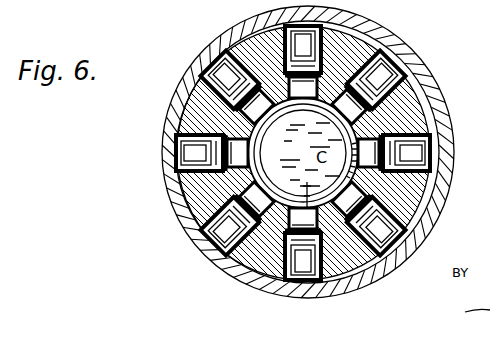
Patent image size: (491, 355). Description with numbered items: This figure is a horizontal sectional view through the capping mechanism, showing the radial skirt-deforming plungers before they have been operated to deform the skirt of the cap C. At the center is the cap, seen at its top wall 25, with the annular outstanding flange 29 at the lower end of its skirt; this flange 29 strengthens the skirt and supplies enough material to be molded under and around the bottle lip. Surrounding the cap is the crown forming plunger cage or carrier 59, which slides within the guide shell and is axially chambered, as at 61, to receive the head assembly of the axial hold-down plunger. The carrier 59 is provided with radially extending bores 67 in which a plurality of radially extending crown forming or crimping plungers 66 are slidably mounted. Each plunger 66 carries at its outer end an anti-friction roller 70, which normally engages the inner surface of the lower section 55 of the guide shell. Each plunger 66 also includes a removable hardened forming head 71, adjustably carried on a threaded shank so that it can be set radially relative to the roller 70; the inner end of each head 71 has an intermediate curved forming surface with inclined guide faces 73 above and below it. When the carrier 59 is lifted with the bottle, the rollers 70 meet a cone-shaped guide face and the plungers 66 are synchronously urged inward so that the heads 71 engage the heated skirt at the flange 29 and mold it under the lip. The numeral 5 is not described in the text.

The motor casing 5 is at (438, 112).
The radially extending bores 67 is at (415, 86).
The crown forming plunger cage or carrier 59 is at (440, 123).
The anti-friction rollers 70 is at (393, 58).
The crown forming or crimping plungers 66 is at (340, 45).
The axial chamber 61 is at (252, 178).
The lower section of the guide shell 55 is at (428, 214).
The forming heads 71 is at (366, 157).
The annular outstanding flange 29 is at (306, 153).
The top wall 25 is at (303, 153).
The inclined guide faces 73 is at (302, 186).